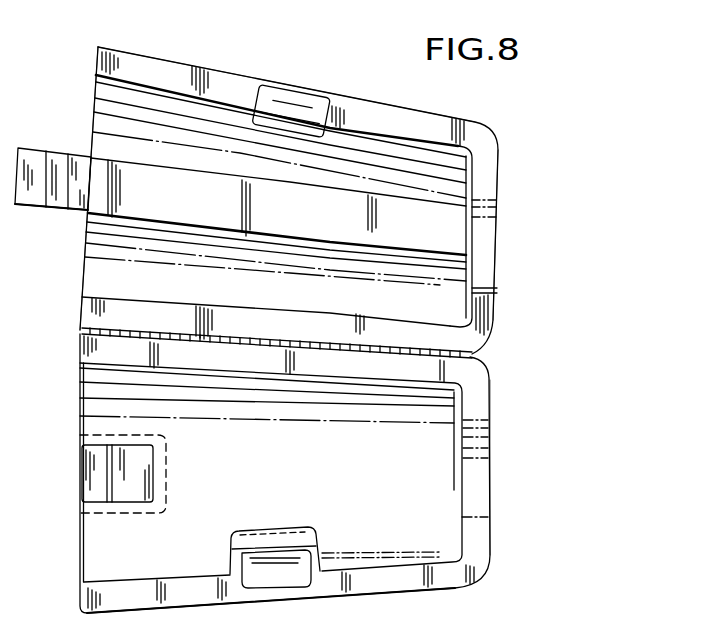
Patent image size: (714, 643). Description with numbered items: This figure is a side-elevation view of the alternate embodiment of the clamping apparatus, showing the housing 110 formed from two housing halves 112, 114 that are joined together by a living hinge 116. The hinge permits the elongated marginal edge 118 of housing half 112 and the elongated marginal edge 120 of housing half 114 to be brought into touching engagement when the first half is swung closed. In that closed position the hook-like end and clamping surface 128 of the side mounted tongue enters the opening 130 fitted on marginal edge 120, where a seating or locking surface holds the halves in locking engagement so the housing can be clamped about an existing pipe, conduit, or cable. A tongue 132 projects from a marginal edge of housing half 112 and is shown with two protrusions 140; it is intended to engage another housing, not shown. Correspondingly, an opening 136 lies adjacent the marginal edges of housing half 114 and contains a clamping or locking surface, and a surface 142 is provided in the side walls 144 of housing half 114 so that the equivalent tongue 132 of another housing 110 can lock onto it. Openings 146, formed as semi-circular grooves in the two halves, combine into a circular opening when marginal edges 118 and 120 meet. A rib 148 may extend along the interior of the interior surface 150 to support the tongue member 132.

The housing 110 is at (244, 64).
The housing half 112 is at (486, 318).
The housing half 114 is at (480, 400).
The living hinge 116 is at (80, 330).
The elongated marginal edge 118 is at (178, 72).
The elongated marginal edge 120 is at (193, 590).
The clamping surface 128 is at (302, 102).
The opening 130 is at (278, 578).
The tongue 132 is at (28, 200).
The opening 136 is at (80, 457).
The protrusions 140 is at (67, 155).
The surface 142 is at (110, 478).
The side walls 144 is at (112, 530).
The openings 146 is at (483, 247).
The rib 148 is at (347, 217).
The interior surface 150 is at (96, 101).